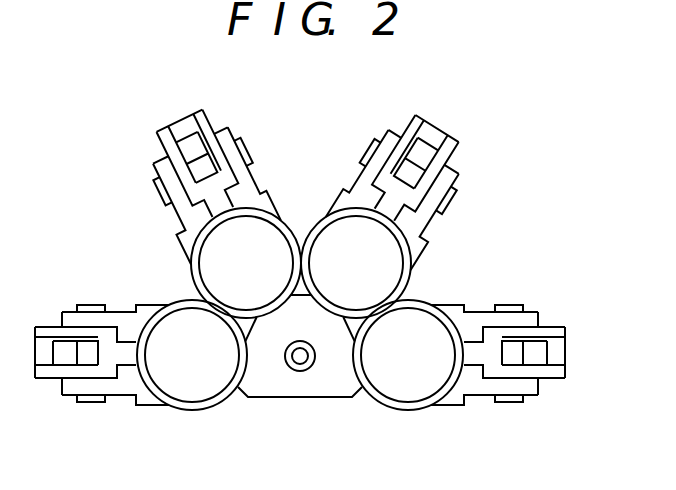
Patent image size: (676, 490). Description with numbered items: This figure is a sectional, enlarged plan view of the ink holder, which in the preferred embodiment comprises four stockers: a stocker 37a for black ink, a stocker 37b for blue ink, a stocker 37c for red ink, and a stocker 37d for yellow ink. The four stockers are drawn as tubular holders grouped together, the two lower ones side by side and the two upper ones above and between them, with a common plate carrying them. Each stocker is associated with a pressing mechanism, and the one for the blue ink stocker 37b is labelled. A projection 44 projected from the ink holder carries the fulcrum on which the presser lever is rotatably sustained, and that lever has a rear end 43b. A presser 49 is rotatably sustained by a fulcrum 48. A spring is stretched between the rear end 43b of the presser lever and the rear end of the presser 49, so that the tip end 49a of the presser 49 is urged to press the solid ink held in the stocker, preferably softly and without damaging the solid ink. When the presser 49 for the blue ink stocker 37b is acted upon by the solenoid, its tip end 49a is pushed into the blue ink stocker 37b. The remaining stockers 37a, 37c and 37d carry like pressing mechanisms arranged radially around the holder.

The stocker for black ink 37a is at (407, 390).
The stocker for blue ink 37b is at (383, 267).
The stocker for red ink 37c is at (213, 259).
The stocker for yellow ink 37d is at (188, 390).
The rear end of the presser lever 43b is at (418, 147).
The projection 44 is at (365, 187).
The fulcrum 48 is at (370, 158).
The presser 49 is at (410, 128).
The tip end of the presser 49a is at (427, 223).